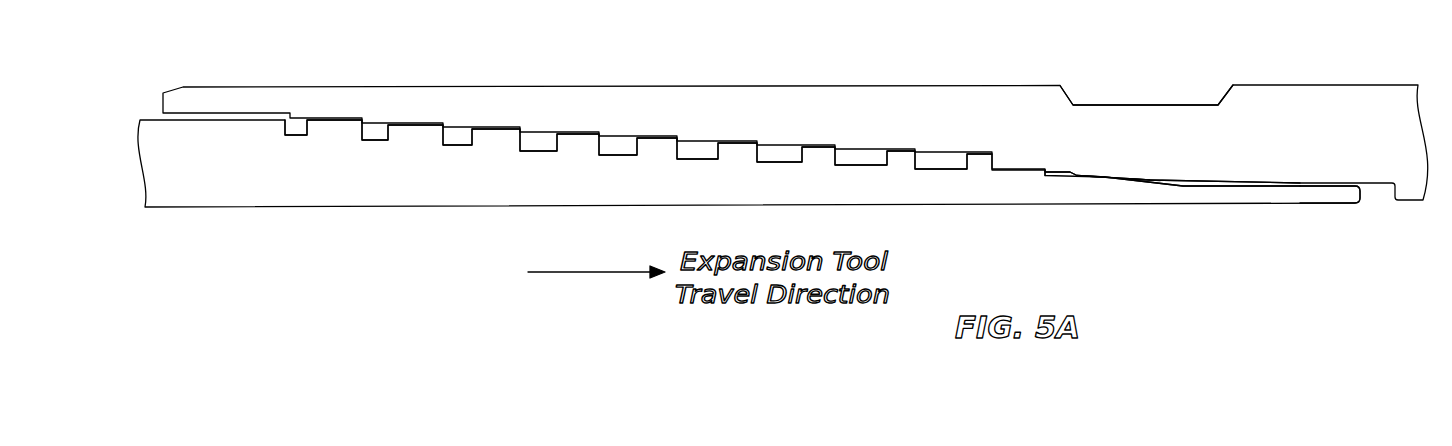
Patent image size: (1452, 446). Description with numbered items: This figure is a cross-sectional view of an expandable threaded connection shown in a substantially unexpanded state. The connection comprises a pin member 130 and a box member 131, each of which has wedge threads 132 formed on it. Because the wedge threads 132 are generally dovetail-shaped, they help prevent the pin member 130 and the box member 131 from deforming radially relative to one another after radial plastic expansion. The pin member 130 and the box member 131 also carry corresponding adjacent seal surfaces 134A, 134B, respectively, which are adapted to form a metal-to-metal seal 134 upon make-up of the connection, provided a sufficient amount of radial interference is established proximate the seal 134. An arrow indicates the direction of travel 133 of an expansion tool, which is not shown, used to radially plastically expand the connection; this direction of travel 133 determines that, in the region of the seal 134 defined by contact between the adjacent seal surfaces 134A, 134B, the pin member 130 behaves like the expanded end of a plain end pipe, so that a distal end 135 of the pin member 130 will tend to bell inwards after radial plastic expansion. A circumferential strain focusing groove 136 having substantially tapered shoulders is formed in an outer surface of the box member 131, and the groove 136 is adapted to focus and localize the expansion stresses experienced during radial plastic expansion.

The pin member 130 is at (270, 197).
The box member 131 is at (1332, 100).
The wedge threads 132 is at (700, 148).
The direction of travel 133 is at (590, 283).
The metal-to-metal seal 134 is at (1163, 180).
The seal surface 134A is at (1112, 178).
The seal surface 134B is at (1145, 178).
The distal end 135 is at (1335, 193).
The circumferential strain focusing groove 136 is at (1172, 103).